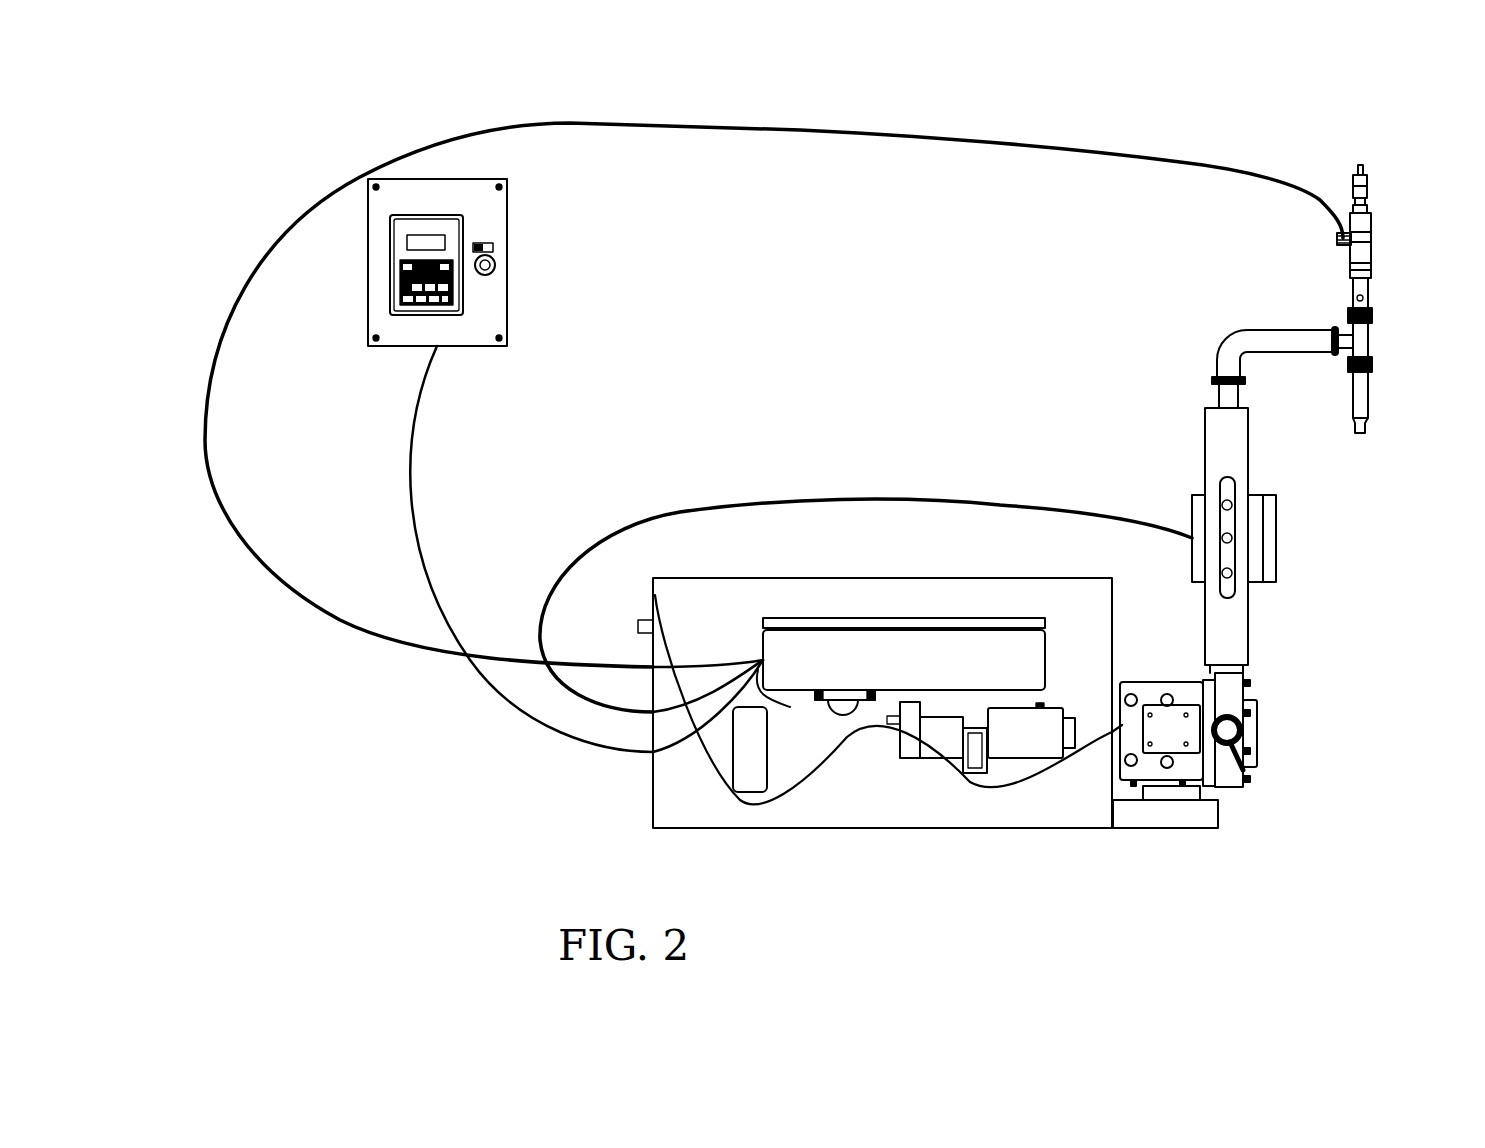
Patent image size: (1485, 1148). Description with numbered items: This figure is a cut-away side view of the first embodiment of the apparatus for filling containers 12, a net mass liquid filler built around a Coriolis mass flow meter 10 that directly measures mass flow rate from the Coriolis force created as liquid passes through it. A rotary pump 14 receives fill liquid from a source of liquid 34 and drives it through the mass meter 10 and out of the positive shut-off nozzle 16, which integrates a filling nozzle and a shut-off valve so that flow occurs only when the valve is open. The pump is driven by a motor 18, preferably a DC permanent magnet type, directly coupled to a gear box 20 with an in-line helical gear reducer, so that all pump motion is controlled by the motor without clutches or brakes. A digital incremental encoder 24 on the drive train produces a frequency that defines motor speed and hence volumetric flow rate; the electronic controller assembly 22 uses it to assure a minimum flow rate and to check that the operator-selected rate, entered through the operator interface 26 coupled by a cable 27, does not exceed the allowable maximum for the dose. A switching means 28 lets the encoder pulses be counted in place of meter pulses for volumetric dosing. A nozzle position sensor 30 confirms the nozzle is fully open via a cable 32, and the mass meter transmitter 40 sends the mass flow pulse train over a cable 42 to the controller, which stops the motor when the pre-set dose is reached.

The Coriolis mass flow meter 10 is at (1222, 457).
The apparatus for filling containers 12 is at (302, 825).
The rotary pump 14 is at (1255, 729).
The positive shut-off nozzle 16 is at (1372, 340).
The motor 18 is at (798, 725).
The gear box 20 is at (1035, 740).
The electronic controller assembly 22 is at (913, 663).
The digital incremental encoder 24 is at (910, 703).
The operator interface 26 is at (432, 197).
The cable 27 is at (404, 443).
The switching means 28 is at (638, 632).
The nozzle position sensor 30 is at (1337, 237).
The cable 32 is at (811, 130).
The source of liquid 34 is at (1240, 770).
The mass meter transmitter 40 is at (1268, 540).
The cable 42 is at (770, 500).